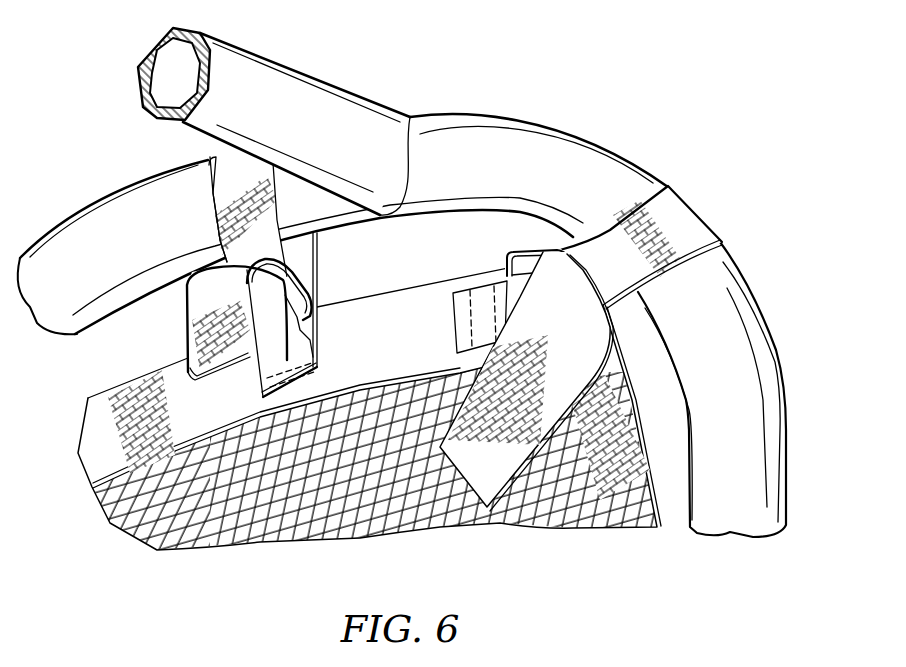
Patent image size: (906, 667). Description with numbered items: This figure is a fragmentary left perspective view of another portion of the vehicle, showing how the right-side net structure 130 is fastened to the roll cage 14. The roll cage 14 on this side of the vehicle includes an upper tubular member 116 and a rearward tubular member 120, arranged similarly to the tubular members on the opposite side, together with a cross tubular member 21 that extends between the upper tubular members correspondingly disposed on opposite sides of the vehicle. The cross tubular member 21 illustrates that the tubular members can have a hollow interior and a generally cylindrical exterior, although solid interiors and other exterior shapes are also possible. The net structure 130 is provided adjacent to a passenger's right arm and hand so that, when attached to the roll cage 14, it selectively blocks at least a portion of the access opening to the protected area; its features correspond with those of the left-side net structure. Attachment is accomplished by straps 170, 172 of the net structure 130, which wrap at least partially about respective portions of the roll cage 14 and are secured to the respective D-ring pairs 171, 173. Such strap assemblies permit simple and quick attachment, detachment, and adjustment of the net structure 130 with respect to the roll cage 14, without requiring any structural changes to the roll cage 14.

The roll cage 14 is at (582, 98).
The cross tubular member 21 is at (280, 58).
The upper tubular member 116 is at (103, 200).
The rearward tubular member 120 is at (787, 483).
The net structure 130 is at (90, 533).
The strap 170 is at (188, 307).
The D-ring pair 171 is at (303, 285).
The strap 172 is at (483, 485).
The D-ring pair 173 is at (512, 244).